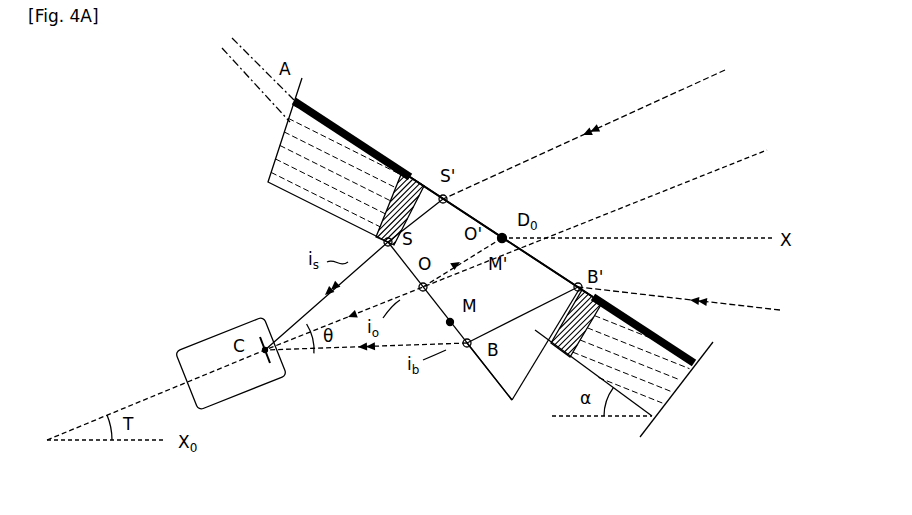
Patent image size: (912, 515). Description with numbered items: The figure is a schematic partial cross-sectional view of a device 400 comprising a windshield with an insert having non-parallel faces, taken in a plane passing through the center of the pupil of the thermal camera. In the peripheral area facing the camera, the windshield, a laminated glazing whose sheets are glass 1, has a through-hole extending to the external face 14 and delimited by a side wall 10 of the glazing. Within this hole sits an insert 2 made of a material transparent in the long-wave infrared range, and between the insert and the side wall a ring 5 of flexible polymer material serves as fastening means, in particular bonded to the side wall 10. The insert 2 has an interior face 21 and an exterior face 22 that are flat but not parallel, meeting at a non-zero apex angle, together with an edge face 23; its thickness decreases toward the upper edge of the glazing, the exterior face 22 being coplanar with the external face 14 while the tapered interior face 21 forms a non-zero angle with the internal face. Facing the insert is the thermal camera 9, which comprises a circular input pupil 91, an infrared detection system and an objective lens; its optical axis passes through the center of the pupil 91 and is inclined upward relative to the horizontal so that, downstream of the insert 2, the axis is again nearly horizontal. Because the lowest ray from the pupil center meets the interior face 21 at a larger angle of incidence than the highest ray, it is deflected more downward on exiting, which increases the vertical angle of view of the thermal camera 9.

The device 400 is at (225, 200).
The ring 5 is at (418, 173).
The glass 1 is at (680, 388).
The external face 14 is at (318, 192).
The side wall 10 is at (535, 331).
The exterior face 22 is at (560, 266).
The insert 2 is at (502, 366).
The interior face 21 is at (500, 372).
The edge face 23 is at (540, 373).
The thermal camera 9 is at (244, 357).
The pupil 91 is at (278, 358).